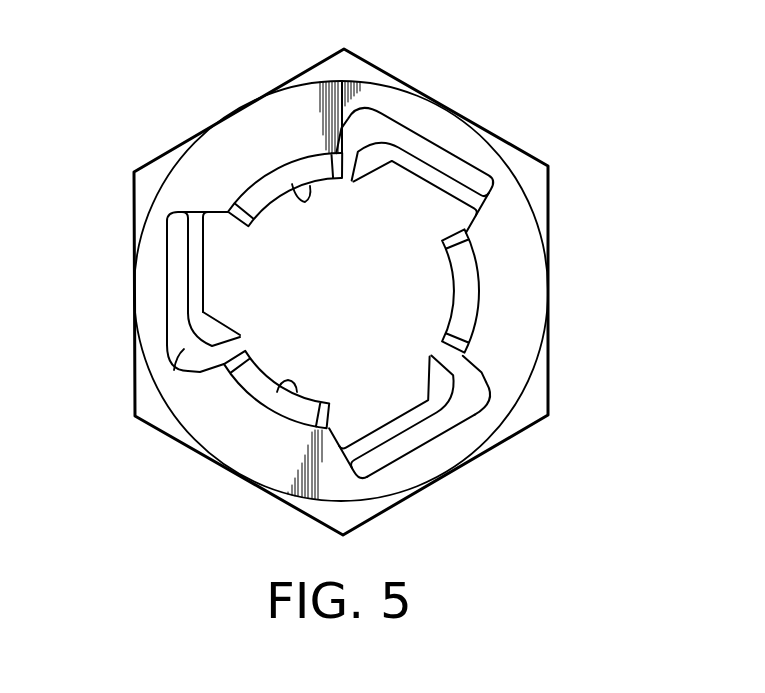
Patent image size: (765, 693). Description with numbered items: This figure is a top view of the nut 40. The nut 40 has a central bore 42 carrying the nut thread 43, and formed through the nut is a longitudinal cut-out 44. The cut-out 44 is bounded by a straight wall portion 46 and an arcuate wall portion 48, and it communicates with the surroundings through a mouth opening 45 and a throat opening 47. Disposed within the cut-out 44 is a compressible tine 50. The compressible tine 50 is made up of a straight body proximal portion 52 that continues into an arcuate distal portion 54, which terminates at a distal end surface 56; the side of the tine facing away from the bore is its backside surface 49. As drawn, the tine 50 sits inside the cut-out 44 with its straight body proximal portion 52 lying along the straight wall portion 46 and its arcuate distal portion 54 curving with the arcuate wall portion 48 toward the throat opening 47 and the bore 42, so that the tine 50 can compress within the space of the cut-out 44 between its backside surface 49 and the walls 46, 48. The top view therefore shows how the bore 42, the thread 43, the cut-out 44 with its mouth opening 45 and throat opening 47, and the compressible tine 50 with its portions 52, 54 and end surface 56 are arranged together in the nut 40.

The nut 40 is at (448, 106).
The bore 42 is at (278, 392).
The nut thread 43 is at (295, 186).
The longitudinal cut-out 44 is at (378, 408).
The mouth opening 45 is at (245, 388).
The straight wall portion 46 is at (427, 452).
The throat opening 47 is at (175, 362).
The arcuate wall portion 48 is at (477, 370).
The backside surface 49 is at (177, 302).
The compressible tine 50 is at (185, 272).
The straight body proximal portion 52 is at (195, 243).
The arcuate distal portion 54 is at (212, 328).
The distal end surface 56 is at (205, 385).